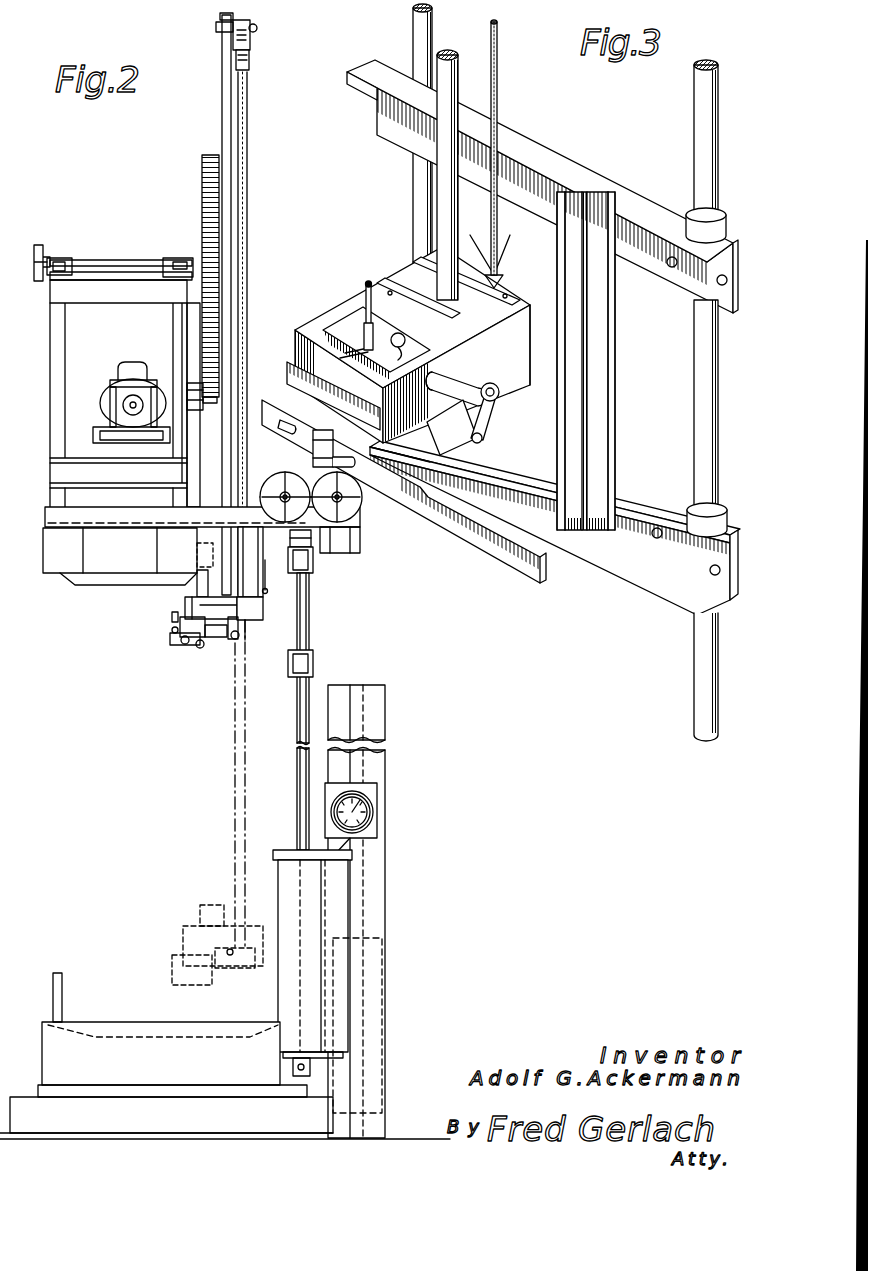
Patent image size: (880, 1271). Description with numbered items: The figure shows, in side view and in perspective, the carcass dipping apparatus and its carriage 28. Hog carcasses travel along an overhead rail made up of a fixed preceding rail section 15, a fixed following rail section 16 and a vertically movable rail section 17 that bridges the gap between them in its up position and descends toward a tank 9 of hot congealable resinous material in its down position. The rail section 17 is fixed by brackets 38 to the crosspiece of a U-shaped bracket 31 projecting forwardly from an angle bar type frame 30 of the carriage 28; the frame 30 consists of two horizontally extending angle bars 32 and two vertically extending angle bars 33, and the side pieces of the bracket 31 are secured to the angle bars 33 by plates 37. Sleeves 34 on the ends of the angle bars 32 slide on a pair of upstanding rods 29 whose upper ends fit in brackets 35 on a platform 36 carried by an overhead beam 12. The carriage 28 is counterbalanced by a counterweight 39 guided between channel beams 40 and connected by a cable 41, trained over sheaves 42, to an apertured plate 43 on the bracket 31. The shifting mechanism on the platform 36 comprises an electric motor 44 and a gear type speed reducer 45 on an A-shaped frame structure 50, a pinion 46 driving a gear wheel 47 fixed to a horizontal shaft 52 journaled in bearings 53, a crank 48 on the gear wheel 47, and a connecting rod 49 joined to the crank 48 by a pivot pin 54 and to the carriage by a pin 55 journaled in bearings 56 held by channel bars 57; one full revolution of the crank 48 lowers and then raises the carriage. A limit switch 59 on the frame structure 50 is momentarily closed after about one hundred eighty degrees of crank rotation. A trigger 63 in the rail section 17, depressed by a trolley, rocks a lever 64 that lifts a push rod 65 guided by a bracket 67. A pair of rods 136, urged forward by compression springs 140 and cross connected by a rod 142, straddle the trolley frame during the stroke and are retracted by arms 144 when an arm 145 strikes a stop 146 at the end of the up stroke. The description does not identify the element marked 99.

In FIG. 2, the tank 9 is at (225, 1056).
In FIG. 2, the overhead beam 12 is at (158, 549).
In FIG. 3, the preceding rail section 15 is at (287, 378).
In FIG. 3, the following rail section 16 is at (460, 532).
In FIG. 3, the vertically movable rail section 17 is at (320, 455).
In FIG. 2, the carriage 28 is at (265, 628).
In FIG. 3, the carriage 28 is at (595, 574).
In FIG. 2, the upstanding rods 29 is at (297, 717).
In FIG. 3, the upstanding rods 29 is at (718, 420).
In FIG. 3, the angle bar type frame 30 is at (621, 351).
In FIG. 2, the U-shaped bracket 31 is at (252, 640).
In FIG. 3, the U-shaped bracket 31 is at (522, 378).
In FIG. 3, the horizontally extending angle bars 32 is at (572, 163).
In FIG. 3, the vertically extending angle bars 33 is at (602, 402).
In FIG. 2, the sleeves 34 is at (313, 662).
In FIG. 3, the sleeves 34 is at (722, 214).
In FIG. 2, the brackets 35 is at (317, 548).
In FIG. 2, the platform 36 is at (201, 512).
In FIG. 3, the plates 37 is at (563, 326).
In FIG. 3, the brackets 38 is at (300, 373).
In FIG. 2, the counterweight 39 is at (373, 962).
In FIG. 2, the channel beams 40 is at (385, 890).
In FIG. 2, the cable 41 is at (242, 562).
In FIG. 3, the cable 41 is at (497, 89).
In FIG. 2, the sheaves 42 is at (358, 499).
In FIG. 2, the apertured plate 43 is at (267, 593).
In FIG. 3, the apertured plate 43 is at (500, 275).
In FIG. 2, the electric motor 44 is at (110, 385).
In FIG. 2, the gear type speed reducer 45 is at (135, 368).
In FIG. 2, the pinion 46 is at (211, 403).
In FIG. 2, the gear wheel 47 is at (202, 245).
In FIG. 2, the crank 48 is at (226, 113).
In FIG. 3, the connecting rod 49 is at (451, 52).
In FIG. 2, the A-shaped frame structure 50 is at (52, 397).
In FIG. 2, the horizontal shaft 52 is at (100, 266).
In FIG. 2, the bearings 53 is at (62, 258).
In FIG. 2, the pivot pin 54 is at (256, 31).
In FIG. 3, the pin 55 is at (398, 333).
In FIG. 3, the bearings 56 is at (352, 328).
In FIG. 3, the channel bars 57 is at (381, 291).
In FIG. 2, the limit switch 59 is at (34, 259).
In FIG. 3, the trigger 63 is at (313, 449).
In FIG. 2, the lever 64 is at (182, 645).
In FIG. 3, the push rod 65 is at (366, 290).
In FIG. 3, the bracket 67 is at (332, 333).
In FIG. 2, the shaft 99 is at (248, 228).
In FIG. 2, the rods 136 is at (200, 648).
In FIG. 3, the rods 136 is at (283, 430).
In FIG. 3, the compression springs 140 is at (415, 448).
In FIG. 3, the rod 142 is at (455, 432).
In FIG. 2, the arms 144 is at (235, 641).
In FIG. 3, the arms 144 is at (490, 420).
In FIG. 3, the arm 145 is at (450, 384).
In FIG. 2, the stop 146 is at (240, 600).
In FIG. 3, the stop 146 is at (500, 393).